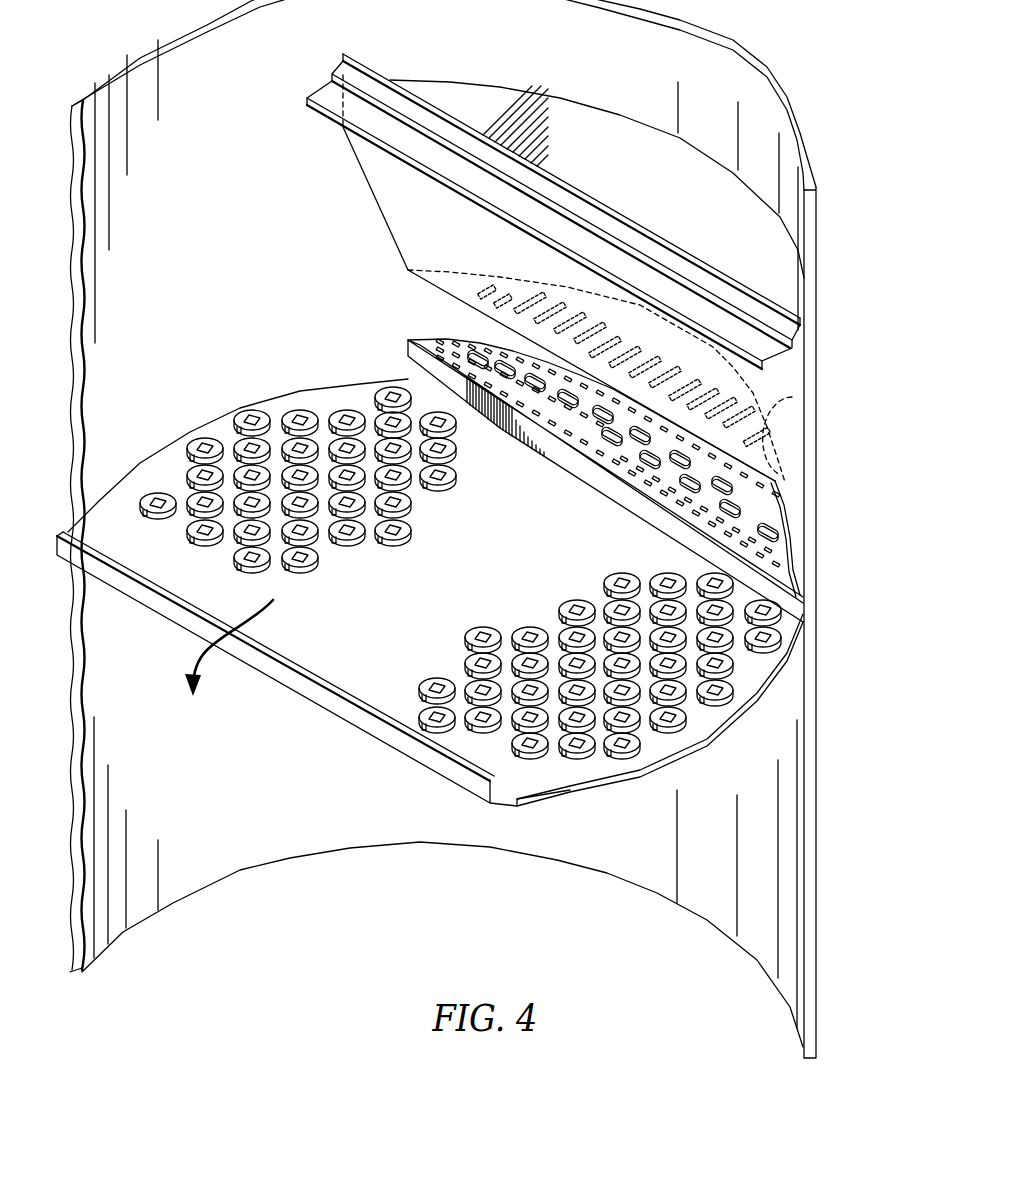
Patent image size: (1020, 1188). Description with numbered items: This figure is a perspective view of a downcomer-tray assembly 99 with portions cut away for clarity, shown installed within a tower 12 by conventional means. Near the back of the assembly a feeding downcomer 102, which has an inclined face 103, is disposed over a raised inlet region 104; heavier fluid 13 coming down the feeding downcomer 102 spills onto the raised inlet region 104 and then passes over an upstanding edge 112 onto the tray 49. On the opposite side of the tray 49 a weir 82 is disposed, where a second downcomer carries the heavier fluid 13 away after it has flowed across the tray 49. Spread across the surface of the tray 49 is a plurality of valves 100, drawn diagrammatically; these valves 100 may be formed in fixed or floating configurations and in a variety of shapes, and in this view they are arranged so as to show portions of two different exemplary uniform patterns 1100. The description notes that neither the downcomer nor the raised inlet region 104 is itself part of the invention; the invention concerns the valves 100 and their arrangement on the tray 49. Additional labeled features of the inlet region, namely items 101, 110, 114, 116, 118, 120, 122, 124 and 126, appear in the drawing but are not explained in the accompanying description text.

The tower 12 is at (817, 828).
The heavier fluid 13 is at (197, 667).
The tray 49 is at (577, 780).
The weir 82 is at (317, 697).
The downcomer-tray assembly 99 is at (230, 238).
The valves 100 is at (338, 403).
The uniform patterns 1100 is at (240, 385).
The slots 101 is at (580, 453).
The feeding downcomer 102 is at (373, 170).
The inclined face 103 is at (397, 230).
The raised inlet region 104 is at (785, 538).
The shroud wall 110 is at (447, 363).
The upstanding edge 112 is at (495, 436).
The perforations 114 is at (778, 484).
The flow path 116 is at (770, 492).
The flow path 118 is at (792, 397).
The louver slats 120 is at (570, 285).
The louver slat 122 is at (747, 422).
The louver slats 124 is at (707, 360).
The small louver slats 126 is at (527, 290).